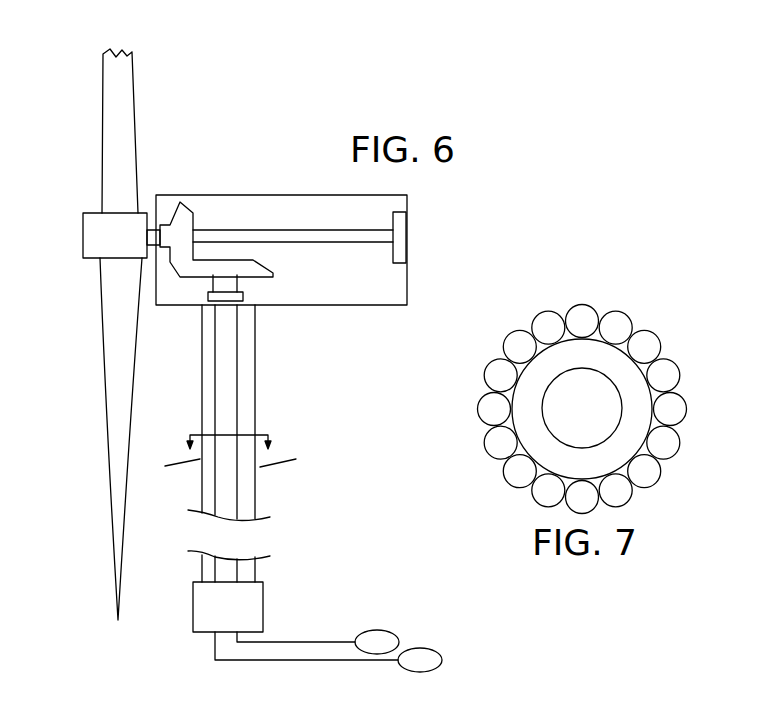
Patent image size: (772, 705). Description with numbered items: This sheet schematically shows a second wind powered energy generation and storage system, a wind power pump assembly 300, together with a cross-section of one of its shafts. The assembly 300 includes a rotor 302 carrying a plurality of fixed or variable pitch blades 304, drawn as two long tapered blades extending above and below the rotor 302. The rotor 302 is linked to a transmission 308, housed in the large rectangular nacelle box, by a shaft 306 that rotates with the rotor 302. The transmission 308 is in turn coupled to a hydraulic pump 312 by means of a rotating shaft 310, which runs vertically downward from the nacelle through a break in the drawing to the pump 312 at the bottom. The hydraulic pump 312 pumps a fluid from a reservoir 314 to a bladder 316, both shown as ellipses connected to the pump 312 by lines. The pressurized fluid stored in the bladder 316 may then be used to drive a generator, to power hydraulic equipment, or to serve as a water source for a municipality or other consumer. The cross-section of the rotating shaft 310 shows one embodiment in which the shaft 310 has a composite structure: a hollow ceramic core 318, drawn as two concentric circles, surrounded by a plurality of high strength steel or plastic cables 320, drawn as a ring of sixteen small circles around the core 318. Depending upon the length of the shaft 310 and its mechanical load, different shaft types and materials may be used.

In FIG. 6, the wind power pump assembly 300 is at (323, 475).
In FIG. 6, the rotor 302 is at (133, 245).
In FIG. 6, the blades 304 is at (120, 150).
In FIG. 6, the shaft 306 is at (157, 222).
In FIG. 6, the transmission 308 is at (185, 229).
In FIG. 6, the rotating shaft 310 is at (223, 383).
In FIG. 6, the hydraulic pump 312 is at (240, 619).
In FIG. 6, the reservoir 314 is at (373, 640).
In FIG. 6, the bladder 316 is at (420, 662).
In FIG. 7, the hollow ceramic core 318 is at (610, 370).
In FIG. 7, the cables 320 is at (543, 322).